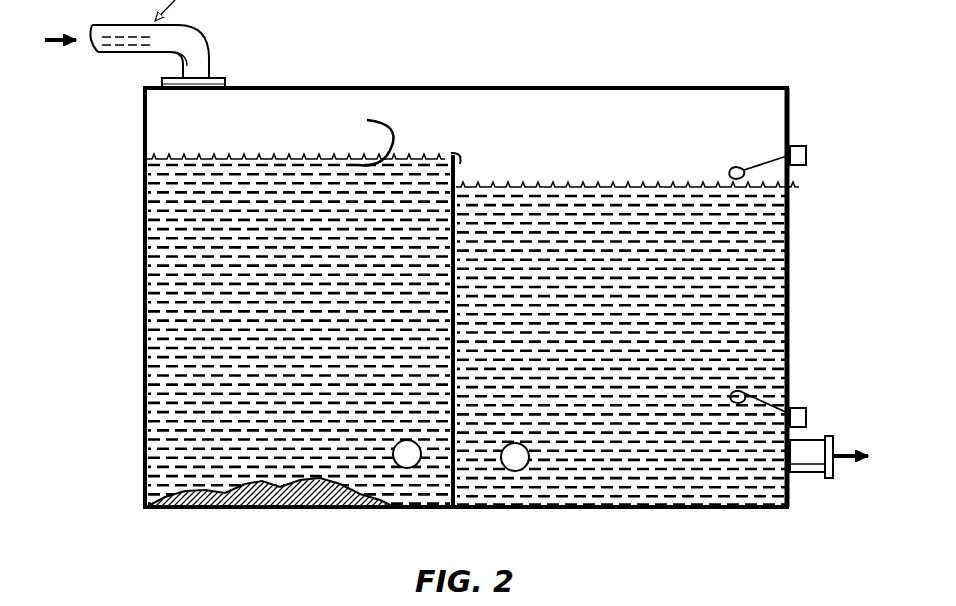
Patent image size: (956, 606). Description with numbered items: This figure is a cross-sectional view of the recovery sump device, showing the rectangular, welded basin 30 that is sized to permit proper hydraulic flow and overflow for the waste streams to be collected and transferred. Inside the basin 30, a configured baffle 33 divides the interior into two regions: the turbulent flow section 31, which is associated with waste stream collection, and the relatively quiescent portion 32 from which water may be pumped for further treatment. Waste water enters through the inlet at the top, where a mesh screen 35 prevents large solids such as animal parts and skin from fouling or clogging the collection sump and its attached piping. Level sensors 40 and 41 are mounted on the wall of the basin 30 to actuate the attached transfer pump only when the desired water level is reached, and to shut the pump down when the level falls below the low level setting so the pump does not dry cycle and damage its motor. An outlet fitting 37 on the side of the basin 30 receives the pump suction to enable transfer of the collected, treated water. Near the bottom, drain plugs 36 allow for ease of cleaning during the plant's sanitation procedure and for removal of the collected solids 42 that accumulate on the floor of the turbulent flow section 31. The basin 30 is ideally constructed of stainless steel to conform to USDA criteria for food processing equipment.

The basin 30 is at (755, 76).
The turbulent flow section 31 is at (304, 330).
The quiescent portion 32 is at (624, 330).
The baffle 33 is at (459, 223).
The mesh screen 35 is at (234, 71).
The drain plugs 36 is at (422, 474).
The outlet fitting 37 is at (808, 483).
The level sensor 40 is at (809, 136).
The level sensor 41 is at (810, 400).
The collected solids 42 is at (228, 486).